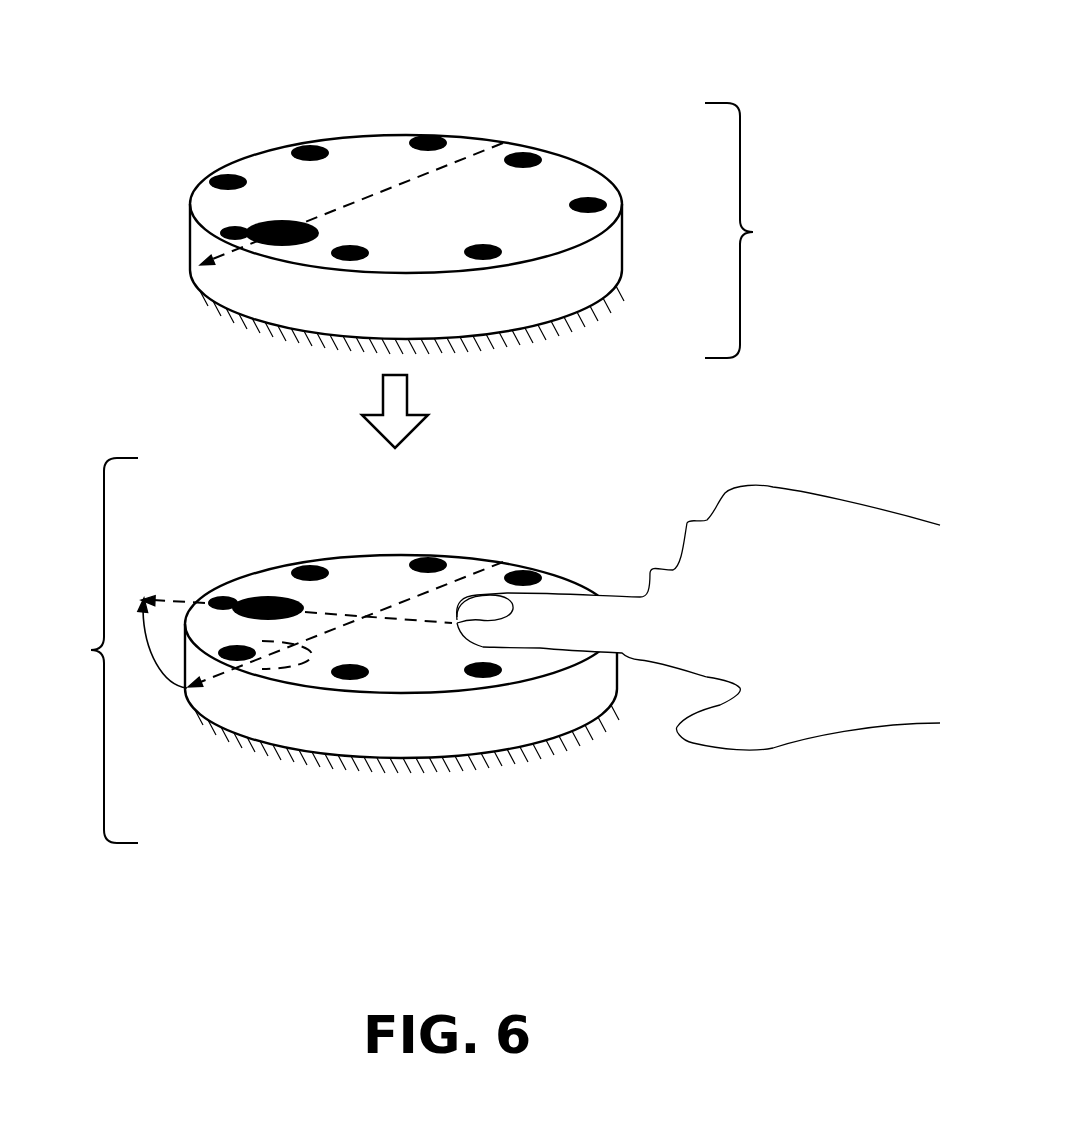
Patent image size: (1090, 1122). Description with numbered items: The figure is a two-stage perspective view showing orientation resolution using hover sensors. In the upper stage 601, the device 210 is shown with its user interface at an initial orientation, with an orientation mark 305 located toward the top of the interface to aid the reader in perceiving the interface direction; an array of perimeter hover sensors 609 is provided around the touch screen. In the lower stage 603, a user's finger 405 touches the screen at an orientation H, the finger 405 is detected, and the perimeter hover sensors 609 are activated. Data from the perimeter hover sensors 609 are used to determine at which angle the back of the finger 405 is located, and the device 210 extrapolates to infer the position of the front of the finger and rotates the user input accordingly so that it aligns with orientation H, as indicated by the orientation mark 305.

The device 210 is at (348, 133).
The orientation mark 305 is at (287, 222).
The hover sensors 609 is at (232, 177).
The finger 405 is at (537, 613).
The first state 601 is at (763, 230).
The second state 603 is at (81, 650).